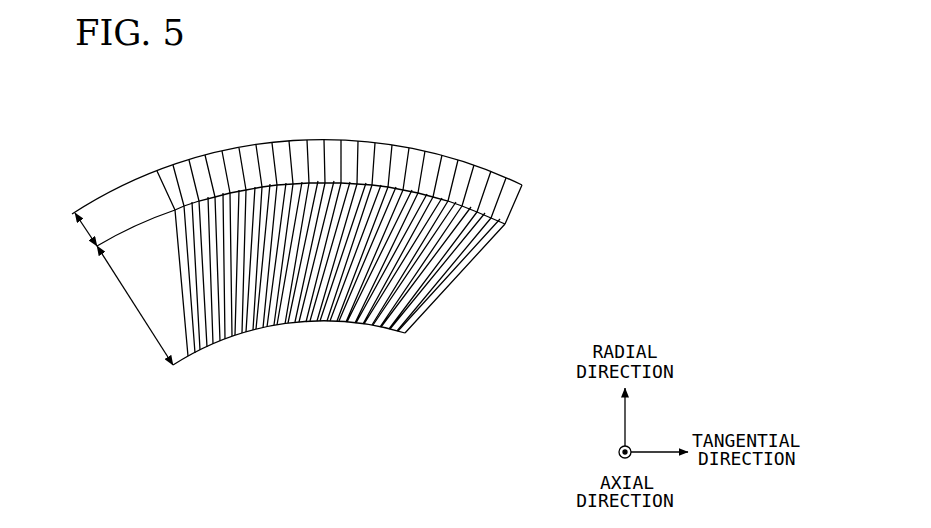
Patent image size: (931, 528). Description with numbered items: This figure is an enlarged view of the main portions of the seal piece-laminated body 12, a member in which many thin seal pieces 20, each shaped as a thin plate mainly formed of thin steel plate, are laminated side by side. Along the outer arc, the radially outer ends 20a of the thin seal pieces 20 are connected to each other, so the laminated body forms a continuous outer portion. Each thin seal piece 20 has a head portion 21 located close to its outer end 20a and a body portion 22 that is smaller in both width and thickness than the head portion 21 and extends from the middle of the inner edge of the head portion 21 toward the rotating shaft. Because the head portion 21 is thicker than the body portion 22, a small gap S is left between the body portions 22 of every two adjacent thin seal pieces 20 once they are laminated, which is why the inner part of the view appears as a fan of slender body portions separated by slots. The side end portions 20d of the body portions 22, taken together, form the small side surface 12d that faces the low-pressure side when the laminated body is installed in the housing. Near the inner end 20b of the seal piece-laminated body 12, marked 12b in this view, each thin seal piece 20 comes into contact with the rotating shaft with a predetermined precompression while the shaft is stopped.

The seal piece-laminated body 12 is at (326, 224).
The inner peripheral surface of stator core 12b is at (402, 334).
The small side surface 12d is at (474, 262).
The thin seal piece 20 is at (335, 139).
The outer end 20a is at (519, 183).
The inner end 20b is at (311, 362).
The side end portion 20d is at (428, 303).
The head portion 21 is at (83, 232).
The body portion 22 is at (132, 311).
The small gap S is at (311, 325).